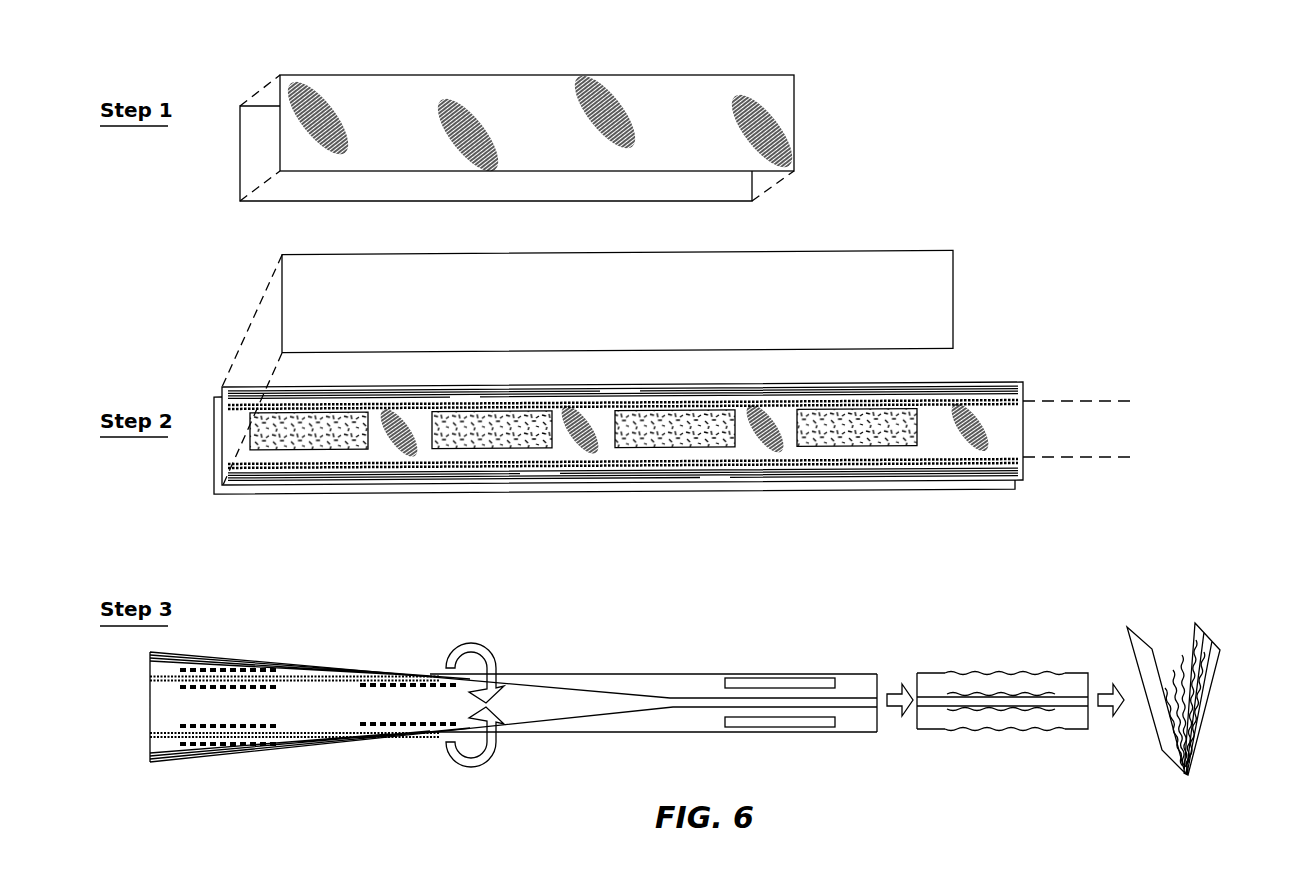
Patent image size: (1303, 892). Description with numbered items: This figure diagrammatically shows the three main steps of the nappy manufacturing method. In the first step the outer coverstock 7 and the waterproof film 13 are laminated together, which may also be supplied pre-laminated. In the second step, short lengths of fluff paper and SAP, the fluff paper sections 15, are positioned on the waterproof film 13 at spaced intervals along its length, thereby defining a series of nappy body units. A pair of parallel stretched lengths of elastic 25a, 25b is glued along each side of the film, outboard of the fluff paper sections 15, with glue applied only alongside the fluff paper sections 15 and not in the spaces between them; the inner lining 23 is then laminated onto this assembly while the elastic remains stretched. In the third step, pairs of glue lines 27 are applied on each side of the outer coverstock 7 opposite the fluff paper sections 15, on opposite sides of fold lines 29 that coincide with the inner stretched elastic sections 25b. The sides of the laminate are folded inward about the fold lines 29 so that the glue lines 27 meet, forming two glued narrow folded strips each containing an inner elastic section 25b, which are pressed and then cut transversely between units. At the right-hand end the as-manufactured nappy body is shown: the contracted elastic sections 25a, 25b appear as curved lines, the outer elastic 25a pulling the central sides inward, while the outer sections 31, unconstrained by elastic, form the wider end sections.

The outer coverstock 7 is at (257, 157).
The waterproof film 13 is at (772, 102).
The fluff paper sections 15 is at (470, 447).
The inner lining 23 is at (930, 297).
The outer stretched elastic section 25a is at (987, 388).
The inner stretched elastic section 25b is at (1000, 456).
The glue lines 27 is at (243, 670).
The fold lines 29 is at (1123, 454).
The outer sections 31 is at (936, 682).